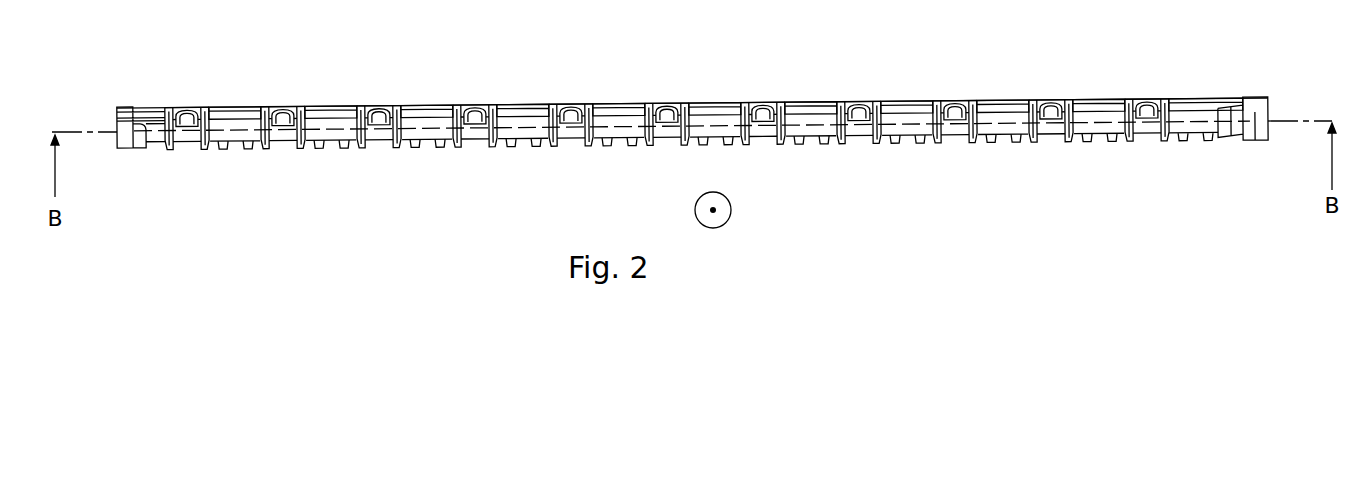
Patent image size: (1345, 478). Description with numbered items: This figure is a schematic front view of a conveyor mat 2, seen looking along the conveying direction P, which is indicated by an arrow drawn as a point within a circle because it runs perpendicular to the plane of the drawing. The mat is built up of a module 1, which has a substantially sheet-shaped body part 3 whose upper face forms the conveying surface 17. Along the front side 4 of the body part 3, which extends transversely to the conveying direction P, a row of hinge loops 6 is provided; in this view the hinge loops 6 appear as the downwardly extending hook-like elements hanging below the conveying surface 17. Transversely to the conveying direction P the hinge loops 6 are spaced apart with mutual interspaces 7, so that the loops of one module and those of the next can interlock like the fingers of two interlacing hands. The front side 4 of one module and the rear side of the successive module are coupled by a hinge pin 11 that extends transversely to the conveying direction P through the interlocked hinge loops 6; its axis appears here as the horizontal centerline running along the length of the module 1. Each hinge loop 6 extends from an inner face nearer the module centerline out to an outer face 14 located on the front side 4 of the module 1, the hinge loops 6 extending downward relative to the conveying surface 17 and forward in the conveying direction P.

The module 1 is at (1281, 89).
The conveyor mat 2 is at (148, 177).
The body part 3 is at (123, 113).
The front side 4 is at (236, 112).
The hinge loops 6 is at (360, 114).
The interspaces 7 is at (427, 117).
The hinge pin 11 is at (332, 131).
The outer faces 14 is at (202, 128).
The conveying surface 17 is at (523, 107).
The conveying direction P is at (713, 210).